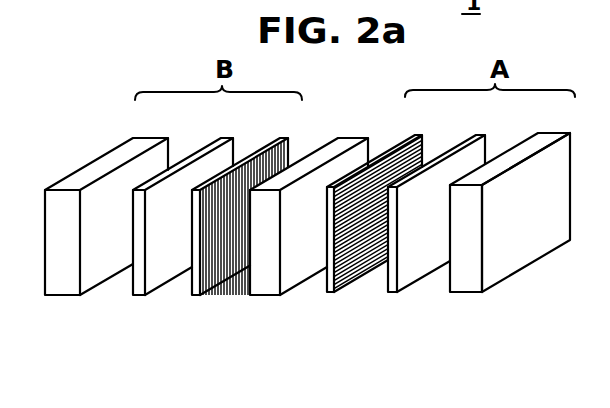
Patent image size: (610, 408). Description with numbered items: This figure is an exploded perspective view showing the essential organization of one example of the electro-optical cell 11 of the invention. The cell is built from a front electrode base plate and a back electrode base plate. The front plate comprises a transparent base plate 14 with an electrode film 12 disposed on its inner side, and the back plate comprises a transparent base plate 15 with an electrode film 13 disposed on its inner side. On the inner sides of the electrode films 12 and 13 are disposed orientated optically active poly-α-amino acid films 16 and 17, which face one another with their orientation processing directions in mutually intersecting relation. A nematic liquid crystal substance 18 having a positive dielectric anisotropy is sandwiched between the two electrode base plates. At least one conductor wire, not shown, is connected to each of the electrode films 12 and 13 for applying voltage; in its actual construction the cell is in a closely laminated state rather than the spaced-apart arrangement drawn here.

The electro-optical cell 11 is at (493, 318).
The electrode film 12 is at (480, 133).
The electrode film 13 is at (228, 138).
The transparent base plate 14 is at (548, 138).
The transparent base plate 15 is at (152, 142).
The orientated optically active poly-α-amino acid film 16 is at (423, 132).
The orientated optically active poly-α-amino acid film 17 is at (286, 138).
The nematic liquid crystal substance 18 is at (348, 138).